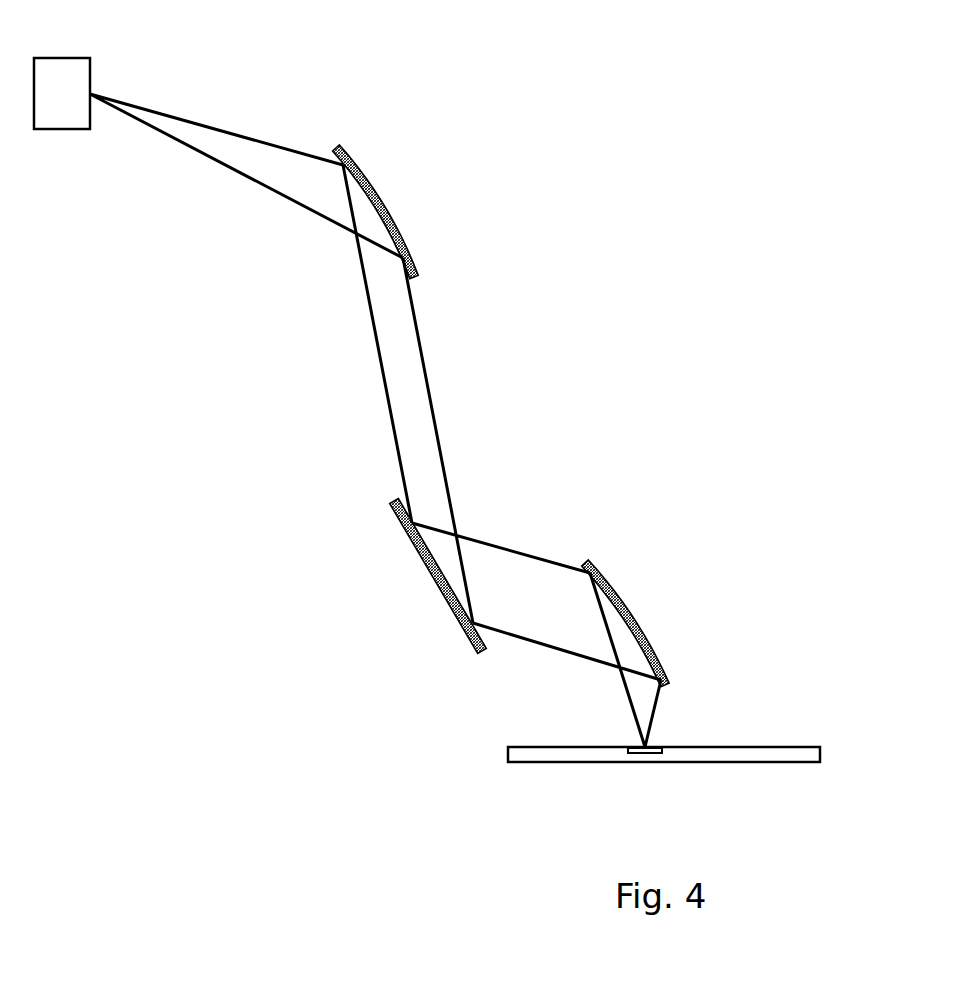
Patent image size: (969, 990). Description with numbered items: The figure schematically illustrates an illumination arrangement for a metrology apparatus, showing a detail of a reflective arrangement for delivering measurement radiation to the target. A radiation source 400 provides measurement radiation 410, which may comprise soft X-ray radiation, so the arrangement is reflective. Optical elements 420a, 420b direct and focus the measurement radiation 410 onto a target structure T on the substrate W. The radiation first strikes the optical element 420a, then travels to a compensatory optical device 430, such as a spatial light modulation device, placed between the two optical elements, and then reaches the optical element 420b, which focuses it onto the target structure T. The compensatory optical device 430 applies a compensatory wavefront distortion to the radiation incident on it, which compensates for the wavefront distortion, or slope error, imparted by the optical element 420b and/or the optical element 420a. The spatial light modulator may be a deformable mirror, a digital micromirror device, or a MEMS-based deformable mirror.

The radiation source 400 is at (92, 58).
The measurement radiation 410 is at (230, 133).
The optical element 420a is at (383, 202).
The optical element 420b is at (640, 628).
The compensatory optical device 430 is at (435, 578).
The substrate W is at (535, 762).
The target structure T is at (630, 762).